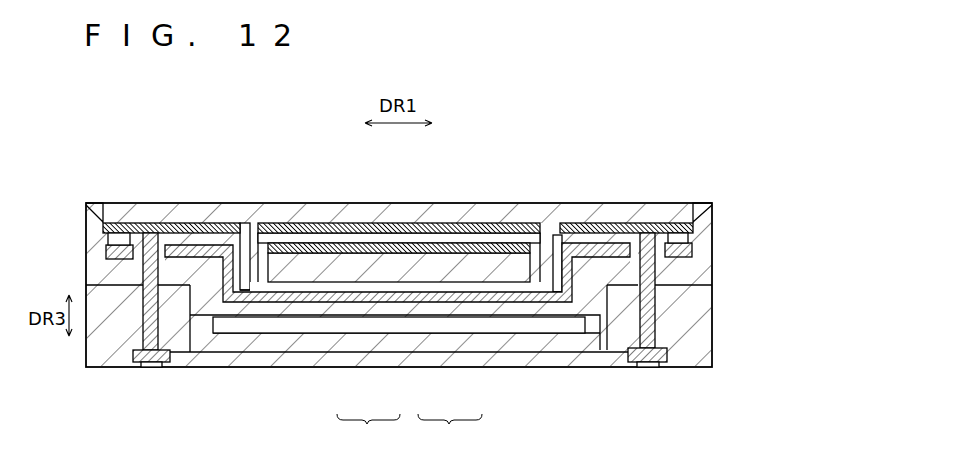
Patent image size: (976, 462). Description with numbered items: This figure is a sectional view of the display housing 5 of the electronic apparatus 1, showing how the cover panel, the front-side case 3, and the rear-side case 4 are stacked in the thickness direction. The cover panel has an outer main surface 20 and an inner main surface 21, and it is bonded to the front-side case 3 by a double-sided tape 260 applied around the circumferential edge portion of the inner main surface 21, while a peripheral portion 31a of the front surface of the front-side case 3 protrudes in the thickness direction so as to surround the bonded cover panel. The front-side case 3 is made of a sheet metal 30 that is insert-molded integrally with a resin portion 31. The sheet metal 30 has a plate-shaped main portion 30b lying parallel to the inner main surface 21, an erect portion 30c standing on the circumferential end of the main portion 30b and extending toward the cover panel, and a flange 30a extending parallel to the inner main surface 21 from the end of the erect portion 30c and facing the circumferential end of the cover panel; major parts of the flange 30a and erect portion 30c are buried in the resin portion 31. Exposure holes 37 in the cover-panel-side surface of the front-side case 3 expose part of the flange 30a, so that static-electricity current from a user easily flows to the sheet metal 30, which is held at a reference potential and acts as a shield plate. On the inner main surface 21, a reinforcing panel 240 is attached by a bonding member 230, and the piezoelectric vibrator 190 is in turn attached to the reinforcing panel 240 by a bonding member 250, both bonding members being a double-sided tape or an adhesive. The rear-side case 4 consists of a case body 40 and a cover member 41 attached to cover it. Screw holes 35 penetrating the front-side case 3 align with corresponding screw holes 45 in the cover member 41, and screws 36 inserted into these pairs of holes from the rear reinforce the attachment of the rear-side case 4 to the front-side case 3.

The electronic apparatus 1 is at (673, 141).
The front-side case 3 is at (450, 432).
The rear-side case 4 is at (368, 432).
The display housing 5 is at (717, 315).
The outer main surface 20 is at (569, 210).
The inner main surface 21 is at (514, 298).
The sheet metal 30 is at (433, 320).
The flange 30a is at (106, 252).
The main portion 30b is at (299, 290).
The erect portion 30c is at (242, 286).
The resin portion 31 is at (474, 306).
The peripheral portion 31a is at (92, 205).
The screw hole 35 is at (142, 275).
The screw 36 is at (152, 357).
The exposure hole 37 is at (108, 238).
The case body 40 is at (393, 342).
The cover member 41 is at (352, 361).
The screw hole 45 is at (137, 349).
The piezoelectric vibrator 190 is at (502, 270).
The bonding member 230 is at (305, 223).
The reinforcing panel 240 is at (372, 236).
The bonding member 250 is at (433, 244).
The double-sided tape 260 is at (209, 223).